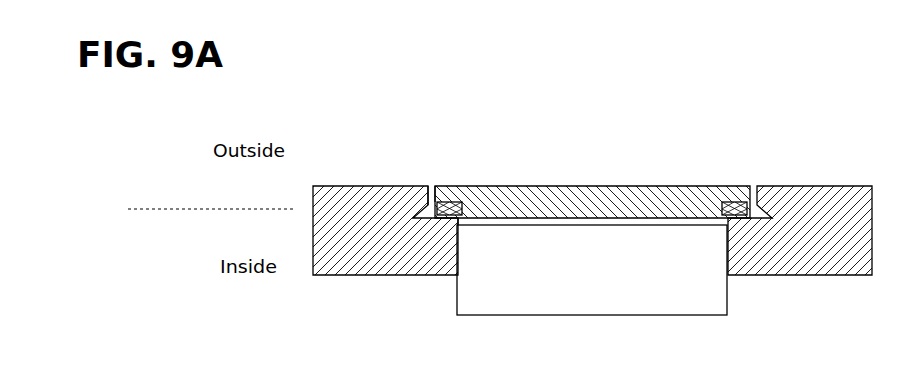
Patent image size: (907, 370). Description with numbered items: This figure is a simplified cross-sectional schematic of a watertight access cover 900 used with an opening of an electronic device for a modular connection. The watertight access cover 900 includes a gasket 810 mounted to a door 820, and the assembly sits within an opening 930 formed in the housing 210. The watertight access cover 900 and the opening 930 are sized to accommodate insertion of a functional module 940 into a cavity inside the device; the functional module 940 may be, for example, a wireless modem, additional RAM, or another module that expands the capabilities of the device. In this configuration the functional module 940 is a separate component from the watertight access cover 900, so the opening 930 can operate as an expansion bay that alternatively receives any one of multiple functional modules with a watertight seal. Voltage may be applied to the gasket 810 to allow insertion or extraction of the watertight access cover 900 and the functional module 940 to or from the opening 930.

The housing 210 is at (352, 186).
The gasket 810 is at (438, 186).
The door 820 is at (498, 186).
The watertight access cover 900 is at (728, 150).
The opening 930 is at (456, 278).
The functional module 940 is at (610, 293).